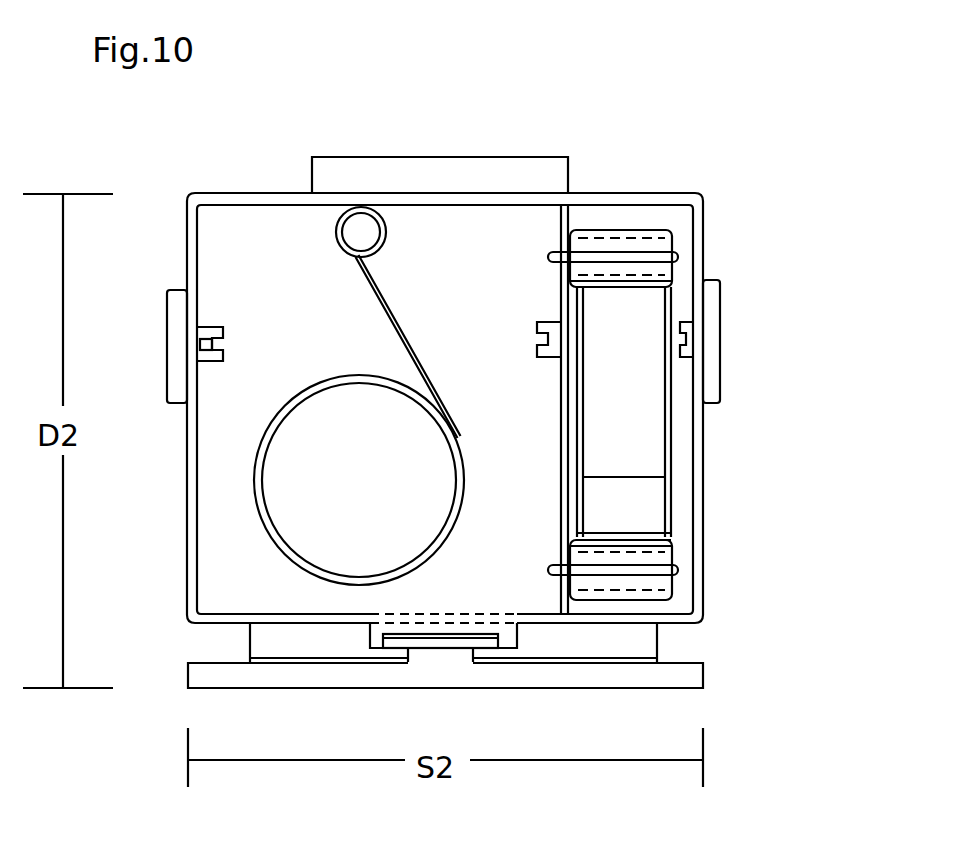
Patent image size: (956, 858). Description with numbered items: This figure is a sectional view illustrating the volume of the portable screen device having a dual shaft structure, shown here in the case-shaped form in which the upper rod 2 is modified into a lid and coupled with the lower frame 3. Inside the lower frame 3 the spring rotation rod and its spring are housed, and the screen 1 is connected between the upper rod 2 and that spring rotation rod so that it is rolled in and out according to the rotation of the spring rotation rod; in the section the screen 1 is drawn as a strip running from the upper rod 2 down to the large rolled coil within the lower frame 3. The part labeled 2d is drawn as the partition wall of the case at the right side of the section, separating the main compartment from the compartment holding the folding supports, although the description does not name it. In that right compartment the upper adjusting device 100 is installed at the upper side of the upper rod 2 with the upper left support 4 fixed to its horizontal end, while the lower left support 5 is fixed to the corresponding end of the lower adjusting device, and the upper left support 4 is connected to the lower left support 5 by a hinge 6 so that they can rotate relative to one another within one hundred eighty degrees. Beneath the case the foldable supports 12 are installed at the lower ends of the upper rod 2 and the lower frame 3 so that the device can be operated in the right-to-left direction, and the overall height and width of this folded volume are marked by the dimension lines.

The screen 1 is at (398, 312).
The upper rod 2 is at (386, 208).
The partition wall 2d is at (592, 200).
The lower frame 3 is at (190, 548).
The upper left support 4 is at (647, 322).
The lower left support 5 is at (650, 490).
The hinge 6 is at (640, 430).
The upper adjusting device 100 is at (670, 236).
The foldable supports 12 is at (520, 688).